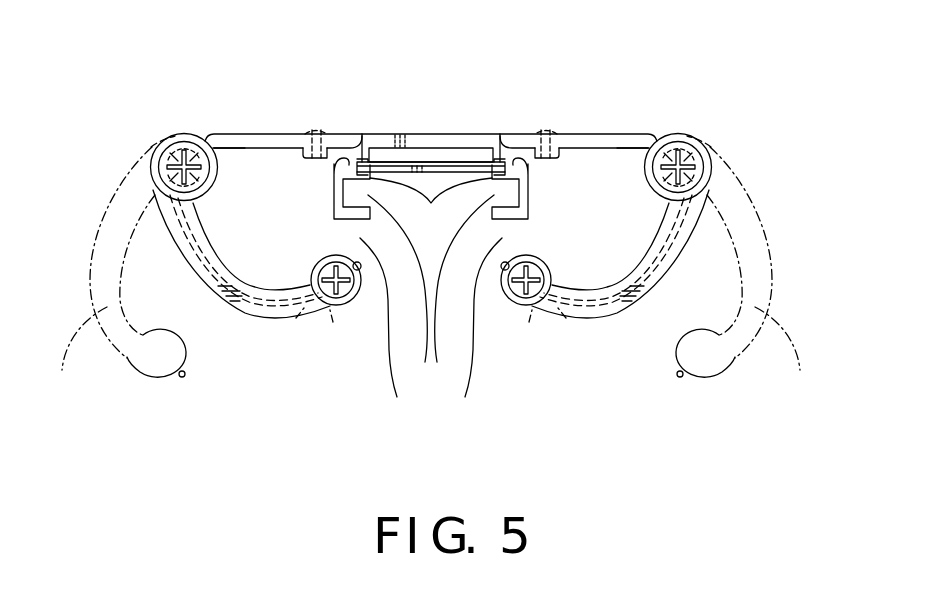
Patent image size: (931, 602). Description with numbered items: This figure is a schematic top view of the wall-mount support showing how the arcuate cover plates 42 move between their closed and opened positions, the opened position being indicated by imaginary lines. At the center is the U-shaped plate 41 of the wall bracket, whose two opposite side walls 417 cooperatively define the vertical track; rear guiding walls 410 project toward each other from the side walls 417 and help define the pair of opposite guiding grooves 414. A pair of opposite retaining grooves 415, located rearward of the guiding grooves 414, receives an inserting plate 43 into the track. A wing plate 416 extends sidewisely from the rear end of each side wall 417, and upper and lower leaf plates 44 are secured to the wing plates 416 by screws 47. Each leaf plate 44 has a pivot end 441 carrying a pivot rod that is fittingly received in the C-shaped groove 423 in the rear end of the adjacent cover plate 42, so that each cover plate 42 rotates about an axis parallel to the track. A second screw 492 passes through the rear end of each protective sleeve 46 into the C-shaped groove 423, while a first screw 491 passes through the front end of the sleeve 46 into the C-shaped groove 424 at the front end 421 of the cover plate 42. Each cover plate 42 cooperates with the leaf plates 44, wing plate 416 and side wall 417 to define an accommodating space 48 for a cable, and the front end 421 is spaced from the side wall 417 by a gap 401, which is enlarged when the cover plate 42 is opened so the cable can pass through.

The U-shaped plate 41 is at (455, 140).
The inserting plate 43 is at (435, 165).
The retaining grooves 415 is at (362, 160).
The screws 47 is at (310, 133).
The wing plates 416 is at (310, 158).
The side walls 417 is at (333, 196).
The rear guiding walls 410 is at (431, 203).
The guiding grooves 414 is at (431, 294).
The gap 401 is at (431, 334).
The upper and lower leaf plates 44 is at (276, 124).
The accommodating space 48 is at (245, 167).
The C-shaped groove 423 is at (197, 143).
The second screw 492 is at (185, 135).
The pivot end 441 is at (151, 147).
The arcuate cover plate 42 is at (192, 258).
The protective sleeves 46 is at (170, 240).
The first screw 491 is at (313, 285).
The C-shaped groove 424 is at (300, 320).
The front end 421 is at (333, 322).